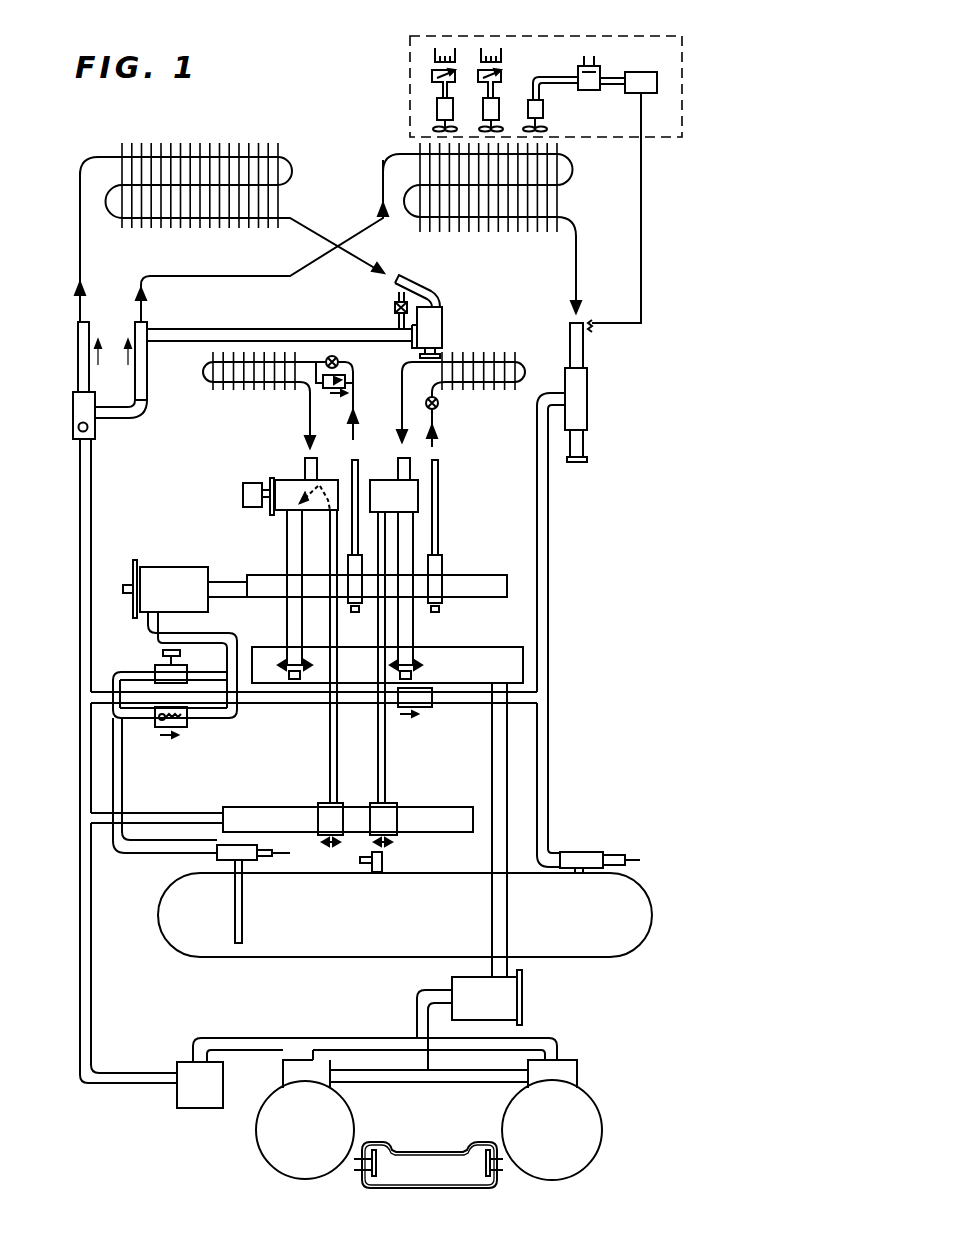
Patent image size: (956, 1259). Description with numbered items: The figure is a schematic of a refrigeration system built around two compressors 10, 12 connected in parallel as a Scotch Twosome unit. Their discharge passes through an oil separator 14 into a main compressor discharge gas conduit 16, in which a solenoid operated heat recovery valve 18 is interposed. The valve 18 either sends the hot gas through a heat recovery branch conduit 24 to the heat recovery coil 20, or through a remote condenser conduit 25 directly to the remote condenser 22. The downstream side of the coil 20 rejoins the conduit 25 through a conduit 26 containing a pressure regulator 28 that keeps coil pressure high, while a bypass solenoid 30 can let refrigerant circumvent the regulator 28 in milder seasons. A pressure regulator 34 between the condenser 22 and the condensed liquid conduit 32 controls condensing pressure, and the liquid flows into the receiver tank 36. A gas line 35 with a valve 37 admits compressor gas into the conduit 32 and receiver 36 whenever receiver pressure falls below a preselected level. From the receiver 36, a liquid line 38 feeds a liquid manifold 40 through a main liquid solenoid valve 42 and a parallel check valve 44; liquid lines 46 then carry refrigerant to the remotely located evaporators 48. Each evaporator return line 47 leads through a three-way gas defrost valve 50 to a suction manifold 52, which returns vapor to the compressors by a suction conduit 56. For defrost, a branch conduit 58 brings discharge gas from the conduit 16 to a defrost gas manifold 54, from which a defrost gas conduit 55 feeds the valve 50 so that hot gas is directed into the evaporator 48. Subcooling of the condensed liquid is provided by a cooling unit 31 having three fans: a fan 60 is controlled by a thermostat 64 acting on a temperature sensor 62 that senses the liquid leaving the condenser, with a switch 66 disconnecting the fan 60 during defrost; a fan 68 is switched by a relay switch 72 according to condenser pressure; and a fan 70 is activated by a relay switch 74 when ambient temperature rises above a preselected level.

The compressor 10 is at (283, 1163).
The compressor 12 is at (578, 1165).
The oil separator 14 is at (188, 1103).
The main compressor discharge gas conduit 16 is at (80, 880).
The heat recovery valve 18 is at (83, 406).
The heat recovery coil 20 is at (220, 143).
The remote condenser 22 is at (467, 232).
The heat recovery branch conduit 24 is at (80, 355).
The remote condenser conduit 25 is at (135, 413).
The conduit 26 is at (205, 329).
The pressure regulator 28 is at (442, 325).
The bypass solenoid 30 is at (395, 307).
The cooling unit 31 is at (535, 37).
The condensed liquid conduit 32 is at (548, 560).
The pressure regulator 34 is at (582, 410).
The gas line 35 is at (297, 692).
The receiver tank 36 is at (636, 915).
The valve 37 is at (425, 705).
The liquid line 38 is at (113, 843).
The liquid manifold 40 is at (275, 575).
The main liquid solenoid valve 42 is at (163, 666).
The check valve 44 is at (187, 728).
The liquid lines 46 is at (358, 472).
The evaporator return line 47 is at (310, 418).
The evaporators 48 is at (258, 390).
The three-way gas defrost valve 50 is at (298, 487).
The suction manifold 52 is at (463, 650).
The defrost gas manifold 54 is at (418, 807).
The defrost gas conduit 55 is at (338, 740).
The suction conduit 56 is at (492, 740).
The branch conduit 58 is at (104, 812).
The fan 60 is at (536, 110).
The temperature sensor 62 is at (592, 330).
The thermostat 64 is at (655, 82).
The switch 66 is at (597, 68).
The fan 68 is at (490, 110).
The fan 70 is at (440, 108).
The relay switch 72 is at (478, 62).
The relay switch 74 is at (434, 60).